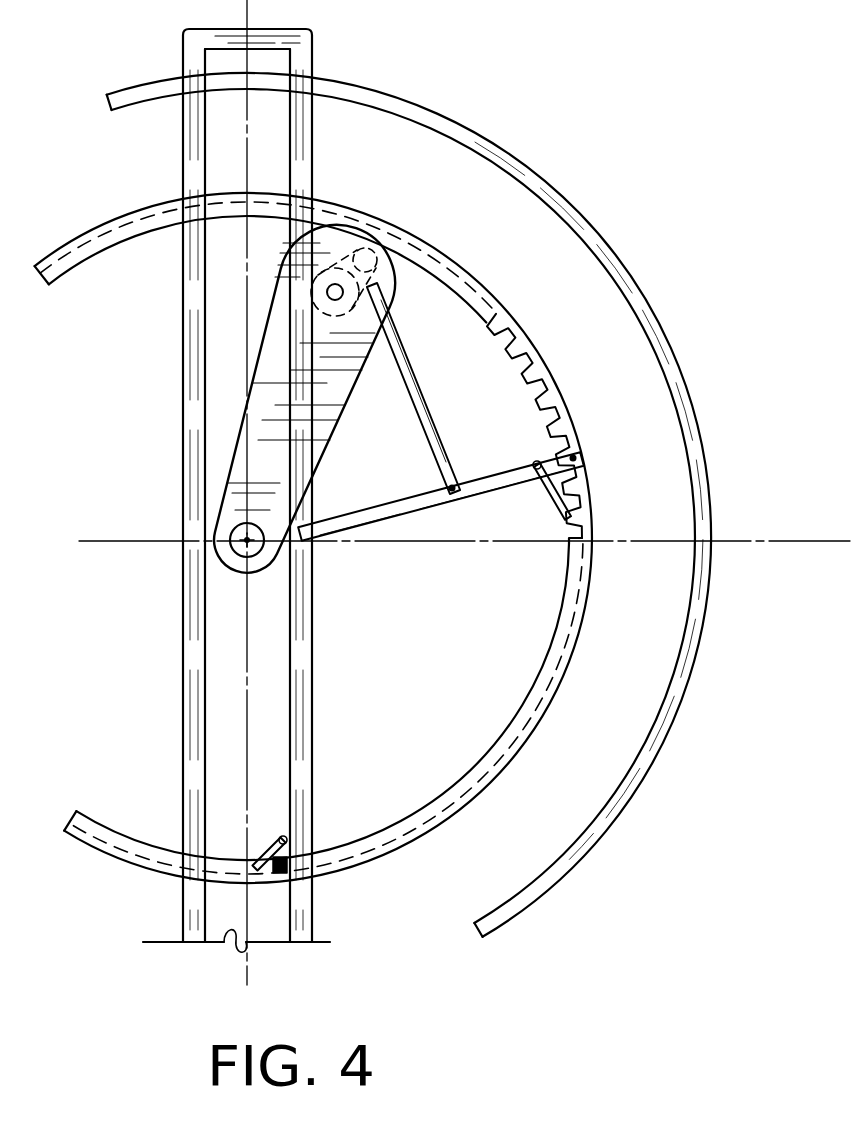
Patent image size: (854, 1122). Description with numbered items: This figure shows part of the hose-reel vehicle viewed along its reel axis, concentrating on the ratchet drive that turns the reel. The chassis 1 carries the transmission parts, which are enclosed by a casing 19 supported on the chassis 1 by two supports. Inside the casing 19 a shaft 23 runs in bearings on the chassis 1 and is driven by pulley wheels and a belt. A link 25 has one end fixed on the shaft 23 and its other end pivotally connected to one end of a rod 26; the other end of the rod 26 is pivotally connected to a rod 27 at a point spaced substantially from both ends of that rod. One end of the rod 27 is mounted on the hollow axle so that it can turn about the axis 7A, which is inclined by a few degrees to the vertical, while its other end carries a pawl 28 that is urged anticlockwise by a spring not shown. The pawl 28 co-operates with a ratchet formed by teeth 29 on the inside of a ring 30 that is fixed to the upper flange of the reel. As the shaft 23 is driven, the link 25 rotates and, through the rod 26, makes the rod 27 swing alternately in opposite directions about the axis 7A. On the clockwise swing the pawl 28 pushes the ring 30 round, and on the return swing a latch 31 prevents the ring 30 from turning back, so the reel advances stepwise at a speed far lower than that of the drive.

The chassis 1 is at (197, 717).
The axis 7A is at (245, 545).
The casing 19 is at (268, 447).
The shaft 23 is at (310, 298).
The link 25 is at (335, 268).
The rod 26 is at (443, 430).
The rod 27 is at (405, 497).
The pawl 28 is at (545, 485).
The teeth 29 is at (548, 378).
The ring 30 is at (578, 419).
The latch 31 is at (257, 850).